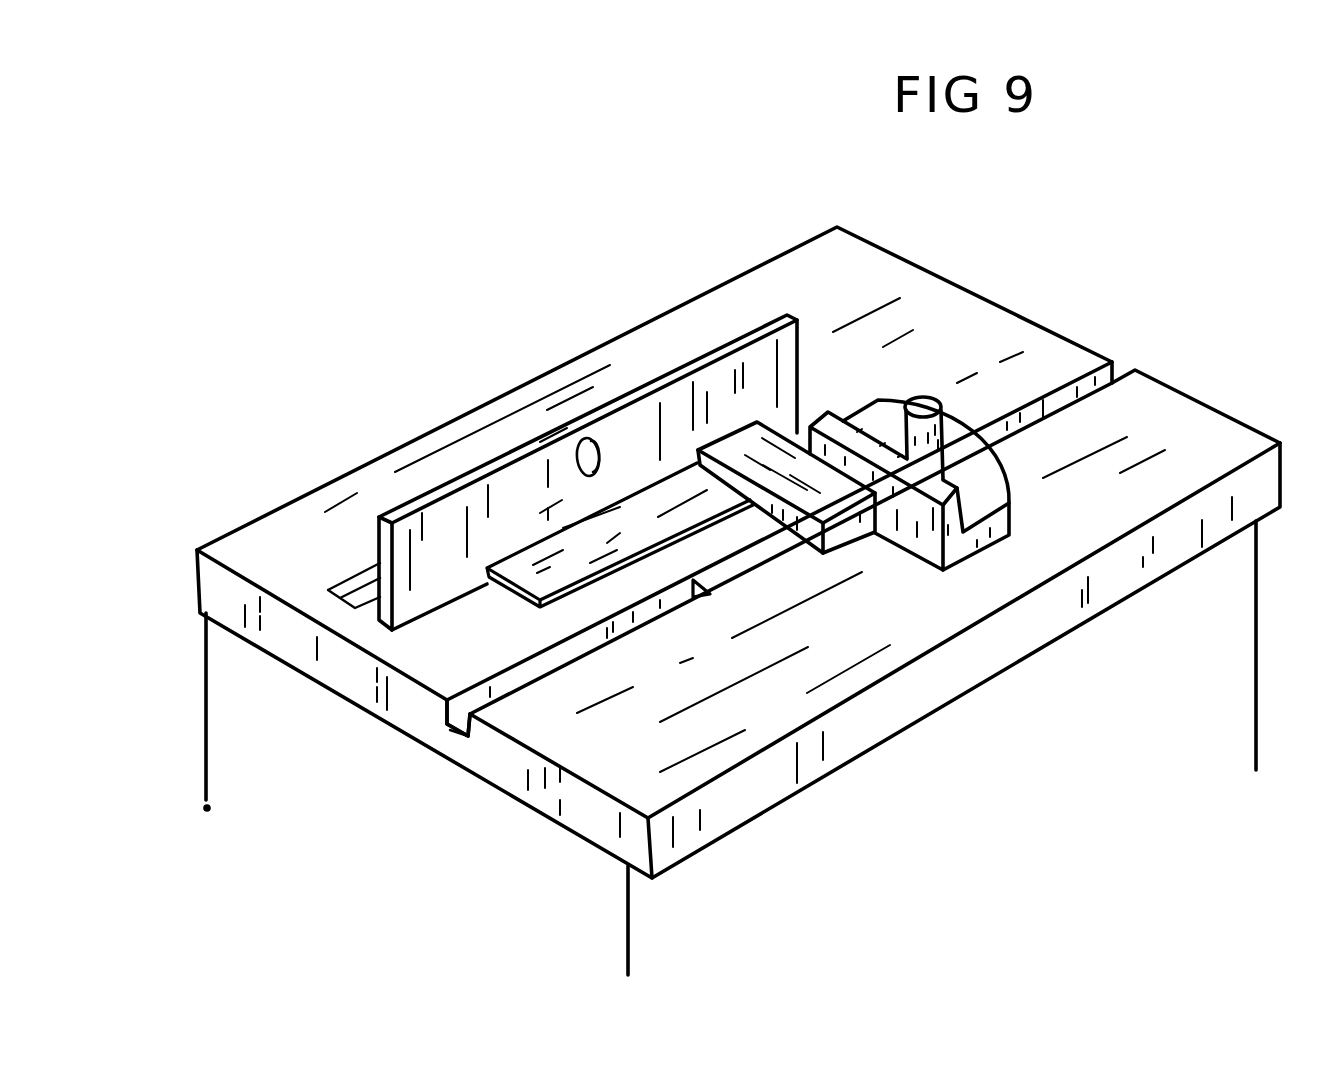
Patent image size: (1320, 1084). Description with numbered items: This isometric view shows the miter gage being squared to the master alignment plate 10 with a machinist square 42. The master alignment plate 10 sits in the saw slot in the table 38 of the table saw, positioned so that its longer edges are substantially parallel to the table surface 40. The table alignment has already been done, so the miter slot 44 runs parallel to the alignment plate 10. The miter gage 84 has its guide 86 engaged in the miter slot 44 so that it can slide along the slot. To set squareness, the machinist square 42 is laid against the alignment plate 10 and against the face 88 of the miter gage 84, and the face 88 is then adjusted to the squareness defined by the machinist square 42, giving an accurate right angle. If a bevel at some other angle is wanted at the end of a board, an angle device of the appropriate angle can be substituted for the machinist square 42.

The master alignment plate 10 is at (767, 318).
The table 38 is at (408, 447).
The table surface 40 is at (343, 530).
The machinist square 42 is at (694, 580).
The miter slot 44 is at (540, 668).
The miter gage 84 is at (1000, 542).
The guide 86 is at (722, 582).
The face 88 is at (905, 533).